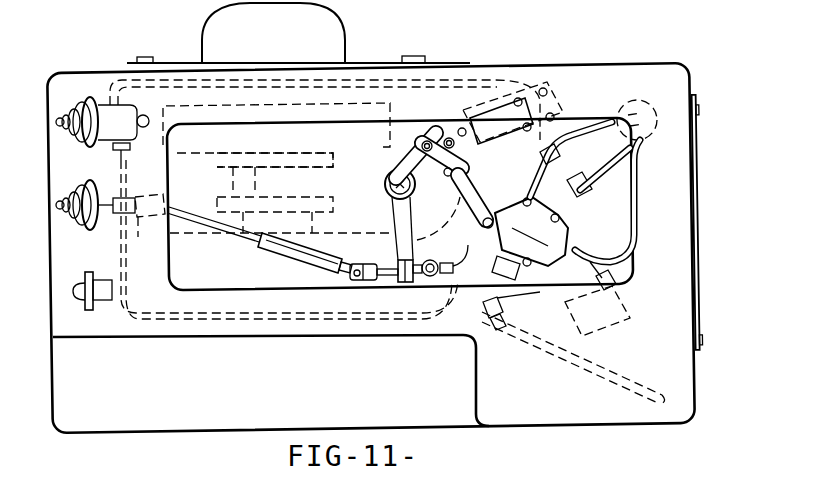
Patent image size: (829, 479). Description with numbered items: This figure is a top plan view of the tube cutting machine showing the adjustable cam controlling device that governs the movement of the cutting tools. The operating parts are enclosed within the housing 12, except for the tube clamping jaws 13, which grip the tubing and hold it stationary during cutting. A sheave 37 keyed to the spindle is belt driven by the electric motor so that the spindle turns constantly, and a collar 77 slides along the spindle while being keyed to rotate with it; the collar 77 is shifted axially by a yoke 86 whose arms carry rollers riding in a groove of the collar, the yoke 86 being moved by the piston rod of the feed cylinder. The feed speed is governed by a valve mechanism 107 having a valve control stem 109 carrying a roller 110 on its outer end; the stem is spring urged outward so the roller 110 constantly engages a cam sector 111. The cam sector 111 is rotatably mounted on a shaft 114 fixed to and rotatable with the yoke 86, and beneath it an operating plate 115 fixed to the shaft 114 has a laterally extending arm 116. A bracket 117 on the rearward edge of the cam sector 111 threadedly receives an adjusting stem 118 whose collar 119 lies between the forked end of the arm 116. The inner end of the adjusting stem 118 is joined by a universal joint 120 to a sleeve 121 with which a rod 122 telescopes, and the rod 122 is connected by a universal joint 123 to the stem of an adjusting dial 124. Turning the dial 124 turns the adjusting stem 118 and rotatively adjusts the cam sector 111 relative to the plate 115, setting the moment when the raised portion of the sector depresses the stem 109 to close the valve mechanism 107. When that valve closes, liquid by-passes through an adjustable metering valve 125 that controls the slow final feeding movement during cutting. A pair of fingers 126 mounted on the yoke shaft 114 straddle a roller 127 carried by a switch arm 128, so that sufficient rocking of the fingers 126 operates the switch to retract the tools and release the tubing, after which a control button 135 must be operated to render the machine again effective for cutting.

The housing 12 is at (56, 285).
The tube clamping jaws 13 is at (469, 265).
The sheave 37 is at (256, 166).
The collar 77 is at (218, 197).
The yoke 86 is at (296, 152).
The valve mechanism 107 is at (530, 272).
The valve control stem 109 is at (484, 212).
The roller 110 is at (485, 208).
The cam sector 111 is at (468, 167).
The shaft 114 is at (385, 184).
The operating plate 115 is at (392, 225).
The arm 116 is at (392, 252).
The bracket 117 is at (412, 280).
The adjusting stem 118 is at (430, 277).
The collar 119 is at (405, 283).
The universal joint 120 is at (352, 281).
The sleeve 121 is at (276, 254).
The rod 122 is at (228, 237).
The universal joint 123 is at (136, 218).
The adjusting dial 124 is at (85, 228).
The metering valve 125 is at (90, 100).
The fingers 126 is at (437, 130).
The roller 127 is at (451, 137).
The switch arm 128 is at (510, 113).
The control button 135 is at (72, 308).